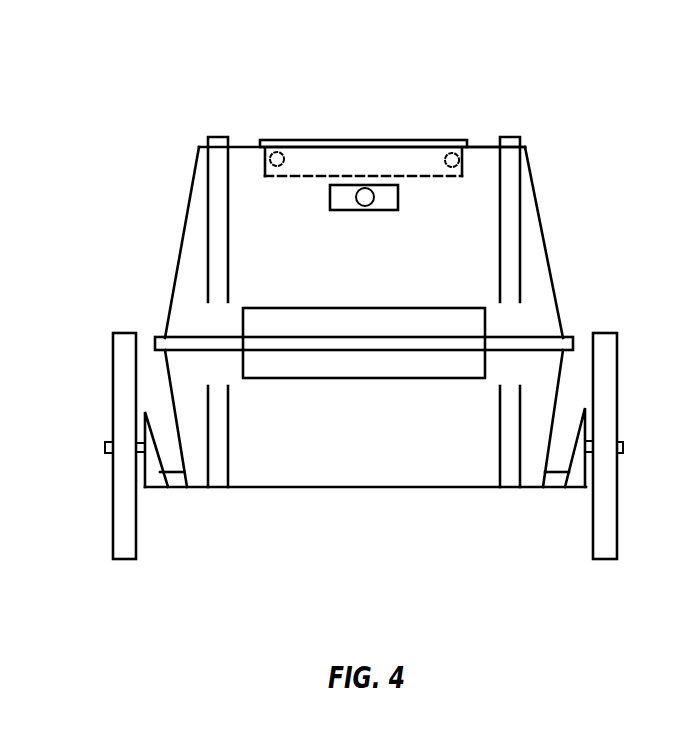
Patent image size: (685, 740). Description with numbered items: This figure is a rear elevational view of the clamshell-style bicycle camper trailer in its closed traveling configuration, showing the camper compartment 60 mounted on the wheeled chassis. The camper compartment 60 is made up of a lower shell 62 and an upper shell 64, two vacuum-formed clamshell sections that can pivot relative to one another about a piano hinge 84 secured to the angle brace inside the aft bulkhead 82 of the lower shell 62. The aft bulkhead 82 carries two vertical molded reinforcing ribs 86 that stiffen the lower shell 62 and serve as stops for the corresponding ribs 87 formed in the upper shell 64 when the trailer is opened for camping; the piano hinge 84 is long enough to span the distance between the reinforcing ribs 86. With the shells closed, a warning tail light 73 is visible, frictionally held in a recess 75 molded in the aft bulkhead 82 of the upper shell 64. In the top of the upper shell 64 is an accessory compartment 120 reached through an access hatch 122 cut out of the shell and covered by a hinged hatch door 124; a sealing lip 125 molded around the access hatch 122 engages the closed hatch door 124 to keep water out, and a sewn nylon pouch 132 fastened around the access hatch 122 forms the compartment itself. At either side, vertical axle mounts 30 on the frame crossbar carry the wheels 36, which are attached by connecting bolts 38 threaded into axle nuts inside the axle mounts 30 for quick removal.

The axle mount 30 is at (155, 477).
The wheel 36 is at (123, 560).
The connecting bolt 38 is at (105, 443).
The camper compartment 60 is at (616, 103).
The lower shell 62 is at (363, 477).
The upper shell 64 is at (485, 240).
The tail light 73 is at (365, 208).
The recess 75 is at (388, 203).
The aft bulkhead 82 is at (247, 147).
The piano hinge 84 is at (363, 379).
The reinforcing rib 86 is at (217, 475).
The rib 87 is at (215, 262).
The accessory compartment 120 is at (358, 162).
The access hatch 122 is at (468, 140).
The hatch door 124 is at (343, 143).
The sealing lip 125 is at (258, 148).
The pouch 132 is at (265, 177).